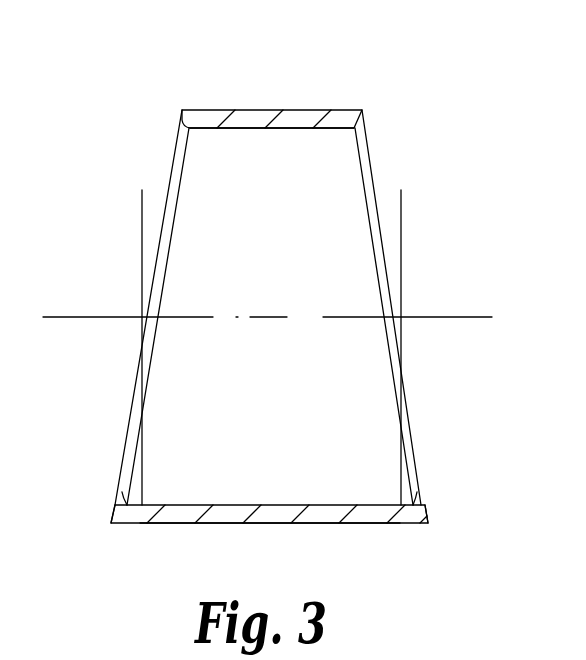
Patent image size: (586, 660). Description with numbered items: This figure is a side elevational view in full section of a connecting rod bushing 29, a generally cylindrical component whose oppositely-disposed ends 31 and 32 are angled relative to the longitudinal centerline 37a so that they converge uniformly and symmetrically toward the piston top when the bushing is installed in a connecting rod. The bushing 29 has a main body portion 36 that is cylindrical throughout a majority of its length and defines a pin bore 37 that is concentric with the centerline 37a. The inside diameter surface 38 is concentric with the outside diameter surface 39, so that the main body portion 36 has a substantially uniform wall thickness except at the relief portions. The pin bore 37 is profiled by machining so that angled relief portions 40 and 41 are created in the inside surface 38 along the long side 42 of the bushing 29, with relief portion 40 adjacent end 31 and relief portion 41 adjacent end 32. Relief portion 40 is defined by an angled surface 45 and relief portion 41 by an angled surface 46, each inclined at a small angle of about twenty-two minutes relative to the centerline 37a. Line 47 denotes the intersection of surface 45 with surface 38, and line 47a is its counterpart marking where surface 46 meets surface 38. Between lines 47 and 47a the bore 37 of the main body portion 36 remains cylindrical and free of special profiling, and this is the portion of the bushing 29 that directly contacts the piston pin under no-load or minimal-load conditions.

The connecting rod bushing 29 is at (285, 325).
The bushing end 31 is at (134, 390).
The bushing end 32 is at (372, 176).
The main body portion 36 is at (172, 524).
The pin bore 37 is at (253, 277).
The longitudinal centerline 37a is at (468, 316).
The inside diameter surface 38 is at (228, 128).
The outside diameter surface 39 is at (251, 110).
The relief portion 40 is at (118, 500).
The relief portion 41 is at (423, 493).
The long side 42 is at (383, 532).
The angled surface 45 is at (119, 499).
The angled surface 46 is at (415, 503).
The line 47 is at (142, 223).
The line 47a is at (401, 208).